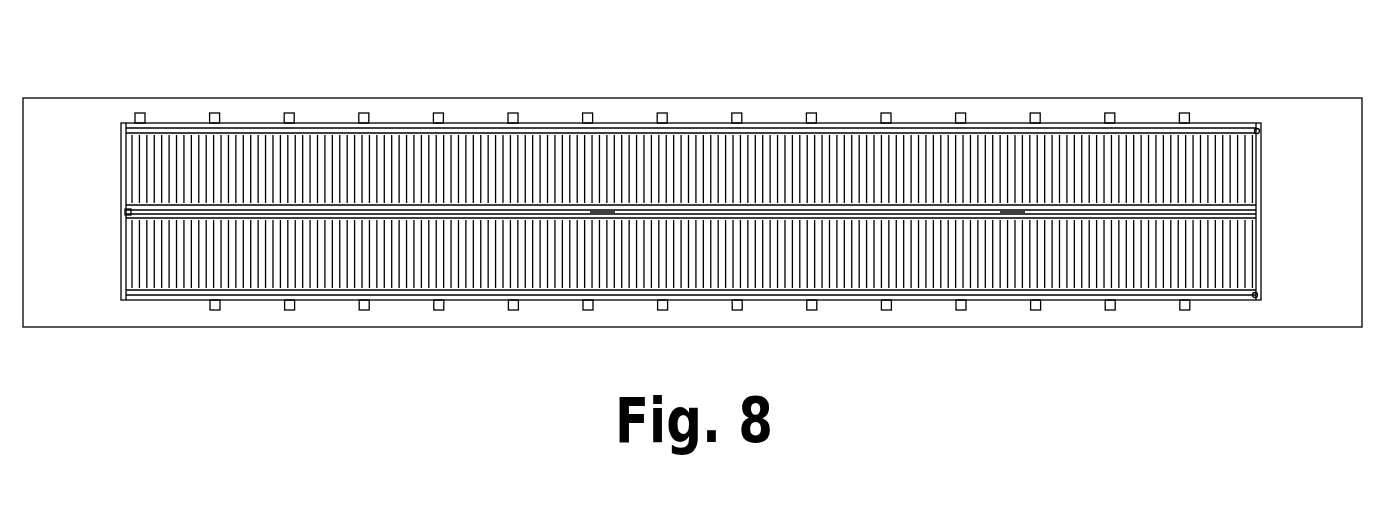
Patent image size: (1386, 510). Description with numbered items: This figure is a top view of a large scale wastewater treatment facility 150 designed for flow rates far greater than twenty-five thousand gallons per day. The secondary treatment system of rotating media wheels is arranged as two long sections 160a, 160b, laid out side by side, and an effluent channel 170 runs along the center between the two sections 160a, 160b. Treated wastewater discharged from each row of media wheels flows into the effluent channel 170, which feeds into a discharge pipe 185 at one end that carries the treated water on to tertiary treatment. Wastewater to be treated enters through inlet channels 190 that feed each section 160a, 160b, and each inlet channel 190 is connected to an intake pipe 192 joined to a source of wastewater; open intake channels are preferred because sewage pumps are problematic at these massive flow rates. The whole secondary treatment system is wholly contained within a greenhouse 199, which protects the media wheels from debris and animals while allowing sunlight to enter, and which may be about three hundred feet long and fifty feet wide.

The facility 150 is at (744, 82).
The first section of media wheels 160a is at (198, 150).
The second section of media wheels 160b is at (185, 267).
The effluent channel 170 is at (380, 212).
The discharge pipe 185 is at (125, 212).
The inlet channel 190 is at (1245, 128).
The intake pipe 192 is at (1260, 131).
The greenhouse 199 is at (77, 97).